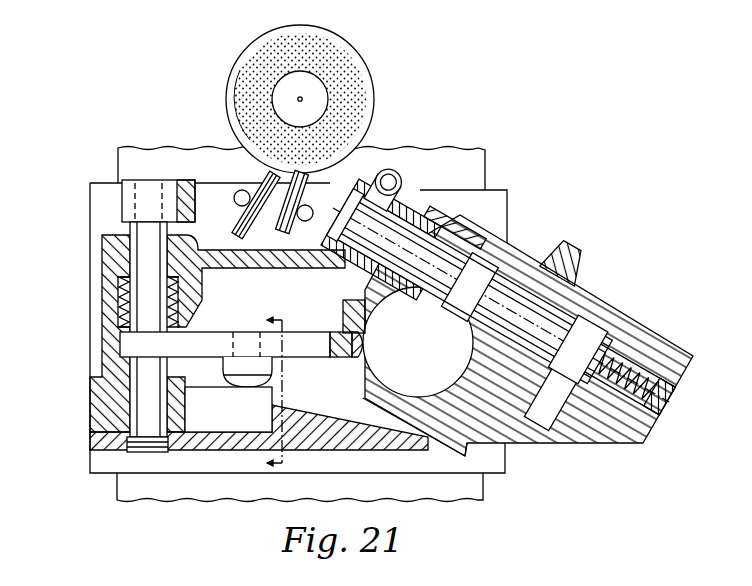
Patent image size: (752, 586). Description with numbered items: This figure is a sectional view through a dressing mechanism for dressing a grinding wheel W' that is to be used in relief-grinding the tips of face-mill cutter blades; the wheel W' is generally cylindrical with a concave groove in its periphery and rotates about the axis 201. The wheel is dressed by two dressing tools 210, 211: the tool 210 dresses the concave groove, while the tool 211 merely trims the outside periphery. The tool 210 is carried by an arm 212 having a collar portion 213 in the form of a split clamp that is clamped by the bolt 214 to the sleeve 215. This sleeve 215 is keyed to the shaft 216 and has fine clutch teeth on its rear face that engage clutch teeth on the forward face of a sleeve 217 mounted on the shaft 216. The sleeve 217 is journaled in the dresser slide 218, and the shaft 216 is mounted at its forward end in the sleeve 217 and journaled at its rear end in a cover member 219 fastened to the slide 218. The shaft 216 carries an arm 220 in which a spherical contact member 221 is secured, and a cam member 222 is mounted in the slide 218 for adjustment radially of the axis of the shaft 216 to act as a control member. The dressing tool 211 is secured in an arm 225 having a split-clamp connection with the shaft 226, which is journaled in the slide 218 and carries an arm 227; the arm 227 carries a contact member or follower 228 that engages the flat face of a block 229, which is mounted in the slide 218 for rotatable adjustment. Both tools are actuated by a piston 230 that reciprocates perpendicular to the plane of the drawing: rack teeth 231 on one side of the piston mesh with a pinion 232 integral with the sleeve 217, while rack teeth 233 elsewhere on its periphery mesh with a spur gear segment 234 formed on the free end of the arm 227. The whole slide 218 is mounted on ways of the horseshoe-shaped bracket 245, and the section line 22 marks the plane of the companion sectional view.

The grinding wheel W' is at (315, 99).
The axis of the wheel 201 is at (300, 101).
The dressing tool 210 is at (320, 195).
The dressing tool 211 is at (268, 182).
The arm 212 is at (308, 232).
The collar portion 213 is at (398, 212).
The bolt 214 is at (396, 176).
The sleeve 215 is at (388, 170).
The shaft 216 is at (480, 262).
The sleeve 217 is at (433, 236).
The dresser slide 218 is at (520, 265).
The cover member 219 is at (650, 337).
The arm 220 is at (590, 337).
The spherical contact member 221 is at (505, 395).
The cam member 222 is at (467, 432).
The arm 225 is at (213, 192).
The shaft 226 is at (147, 267).
The arm 227 is at (212, 340).
The contact member or follower 228 is at (237, 380).
The block 229 is at (262, 400).
The piston 230 is at (375, 367).
The rack teeth 231 is at (455, 315).
The pinion 232 is at (500, 260).
The rack teeth 233 is at (348, 330).
The spur gear segment 234 is at (357, 357).
The bracket 245 is at (170, 497).
The section line 22- 22 is at (261, 393).